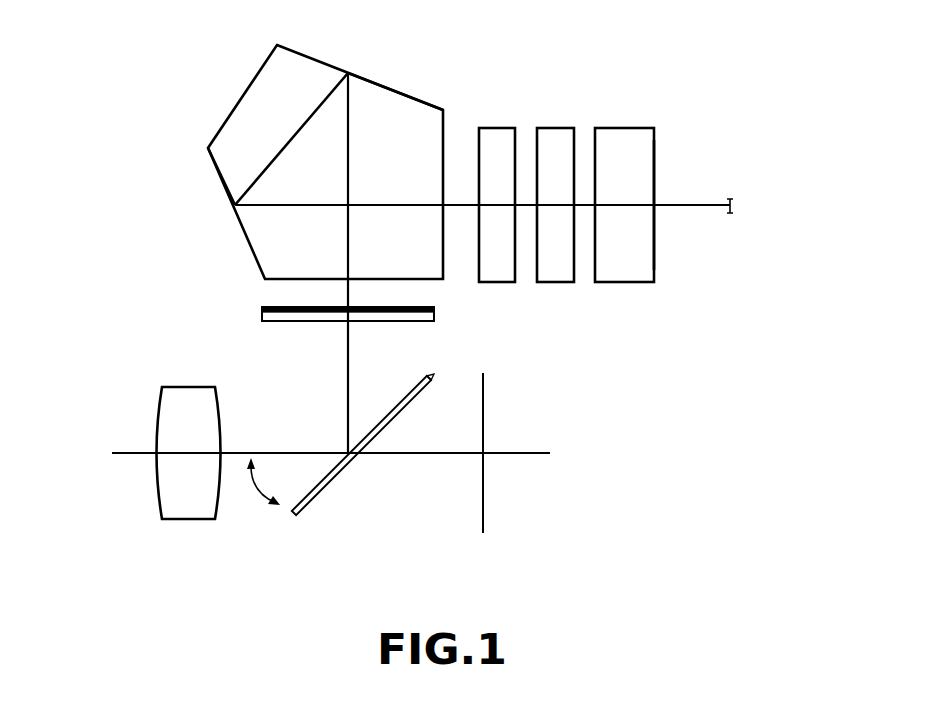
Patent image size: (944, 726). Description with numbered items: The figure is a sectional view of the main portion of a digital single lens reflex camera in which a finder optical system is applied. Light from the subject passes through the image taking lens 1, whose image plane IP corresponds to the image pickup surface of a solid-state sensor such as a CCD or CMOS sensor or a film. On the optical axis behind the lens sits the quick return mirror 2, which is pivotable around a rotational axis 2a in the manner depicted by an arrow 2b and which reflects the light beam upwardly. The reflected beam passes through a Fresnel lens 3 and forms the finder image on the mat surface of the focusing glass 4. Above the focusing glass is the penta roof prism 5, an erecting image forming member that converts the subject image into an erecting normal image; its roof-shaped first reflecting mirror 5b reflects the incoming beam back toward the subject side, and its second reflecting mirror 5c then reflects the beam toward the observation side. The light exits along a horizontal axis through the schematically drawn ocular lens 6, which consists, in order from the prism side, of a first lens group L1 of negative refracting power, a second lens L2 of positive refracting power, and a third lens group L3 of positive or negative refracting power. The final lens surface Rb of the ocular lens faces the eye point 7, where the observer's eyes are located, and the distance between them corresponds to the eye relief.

The image taking lens 1 is at (162, 408).
The quick return mirror 2 is at (310, 503).
The rotational axis 2a is at (431, 378).
The arrow 2b is at (254, 483).
The focusing glass (Fresnel lens) 3 is at (275, 322).
The focusing glass (mat surface) 4 is at (296, 307).
The penta roof prism 5 is at (240, 123).
The first reflecting mirror 5b is at (375, 95).
The second reflecting mirror 5c is at (231, 175).
The ocular lens 6 is at (571, 212).
The eye point 7 is at (733, 199).
The first lens group L1 is at (520, 108).
The second lens L2 is at (577, 108).
The third lens group L3 is at (665, 108).
The final lens surface Rb is at (655, 250).
The image plane IP is at (484, 500).